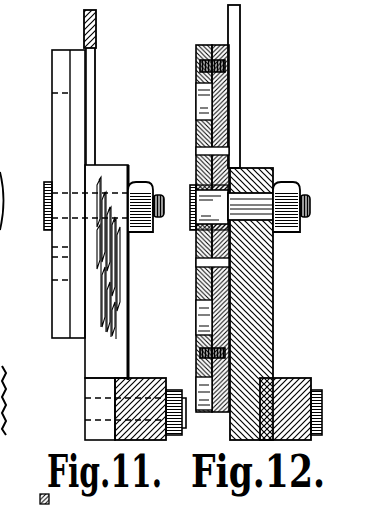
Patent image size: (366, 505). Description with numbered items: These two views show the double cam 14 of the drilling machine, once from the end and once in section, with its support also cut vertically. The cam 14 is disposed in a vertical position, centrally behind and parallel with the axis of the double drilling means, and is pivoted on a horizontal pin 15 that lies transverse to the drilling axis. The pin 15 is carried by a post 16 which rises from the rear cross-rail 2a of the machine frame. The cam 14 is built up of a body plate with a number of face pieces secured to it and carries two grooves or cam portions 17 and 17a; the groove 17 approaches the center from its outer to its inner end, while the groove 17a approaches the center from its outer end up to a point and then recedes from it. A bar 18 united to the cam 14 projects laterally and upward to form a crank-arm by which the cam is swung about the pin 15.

In FIG. 11, the cross-rail 2a is at (143, 392).
In FIG. 12, the cross-rail 2a is at (282, 392).
In FIG. 11, the double cam 14 is at (57, 332).
In FIG. 12, the double cam 14 is at (196, 78).
In FIG. 11, the pin 15 is at (47, 208).
In FIG. 12, the pin 15 is at (192, 192).
In FIG. 11, the post 16 is at (121, 257).
In FIG. 12, the post 16 is at (258, 287).
In FIG. 12, the groove 17 is at (197, 318).
In FIG. 12, the groove 17a is at (198, 112).
In FIG. 11, the bar 18 is at (96, 28).
In FIG. 12, the bar 18 is at (233, 29).